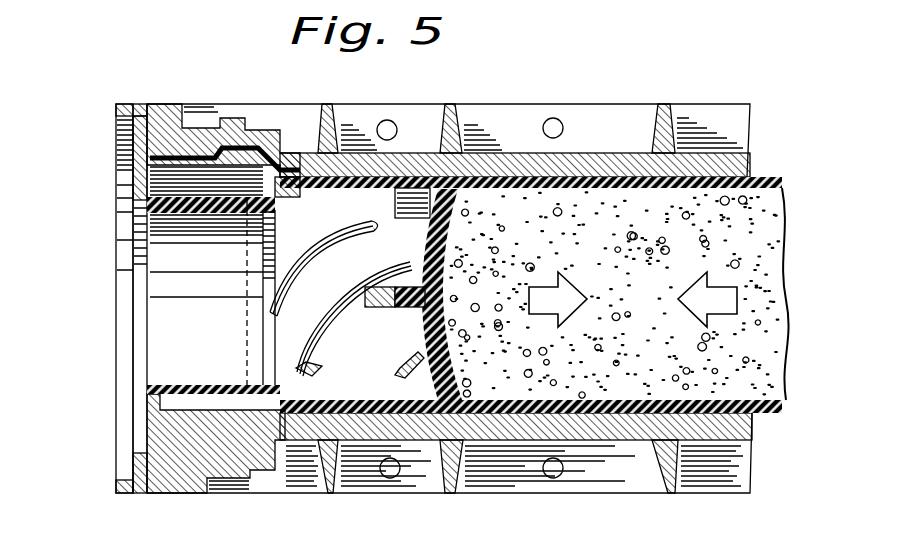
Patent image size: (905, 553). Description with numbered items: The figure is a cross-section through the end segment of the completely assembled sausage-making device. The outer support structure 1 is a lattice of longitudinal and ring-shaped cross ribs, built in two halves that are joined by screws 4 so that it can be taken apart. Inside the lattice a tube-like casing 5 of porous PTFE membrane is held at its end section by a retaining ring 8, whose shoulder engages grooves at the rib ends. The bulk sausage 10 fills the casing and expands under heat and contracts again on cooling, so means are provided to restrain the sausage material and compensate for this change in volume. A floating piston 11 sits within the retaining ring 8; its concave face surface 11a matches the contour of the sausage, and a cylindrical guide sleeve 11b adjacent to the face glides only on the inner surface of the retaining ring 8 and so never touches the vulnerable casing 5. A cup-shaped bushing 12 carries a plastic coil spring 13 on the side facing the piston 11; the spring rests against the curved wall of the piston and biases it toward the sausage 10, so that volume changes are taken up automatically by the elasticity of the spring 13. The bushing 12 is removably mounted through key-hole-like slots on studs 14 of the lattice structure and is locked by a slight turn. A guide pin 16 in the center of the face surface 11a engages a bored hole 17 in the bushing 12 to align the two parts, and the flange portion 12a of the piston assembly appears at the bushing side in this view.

The support structure 1 is at (693, 100).
The screws 4 is at (556, 475).
The tube-like casing 5 is at (778, 178).
The retaining ring 8 is at (222, 142).
The bulk sausage 10 is at (718, 370).
The floating piston 11 is at (432, 410).
The concave face surface 11a is at (503, 182).
The cylindrical guide sleeve 11b is at (373, 190).
The bushing 12 is at (173, 213).
The piston seal flange 12a is at (143, 182).
The plastic coil spring 13 is at (295, 262).
The studs 14 is at (116, 118).
The guide pin 16 is at (382, 310).
The bored hole 17 is at (407, 308).